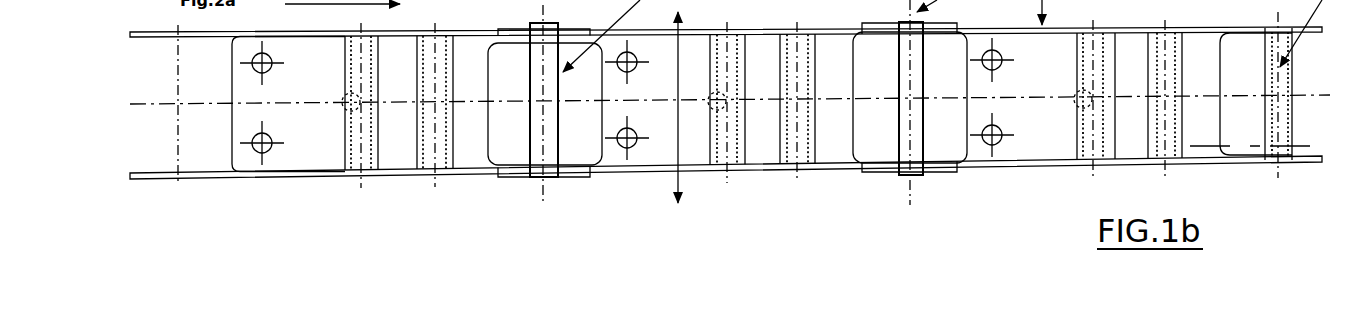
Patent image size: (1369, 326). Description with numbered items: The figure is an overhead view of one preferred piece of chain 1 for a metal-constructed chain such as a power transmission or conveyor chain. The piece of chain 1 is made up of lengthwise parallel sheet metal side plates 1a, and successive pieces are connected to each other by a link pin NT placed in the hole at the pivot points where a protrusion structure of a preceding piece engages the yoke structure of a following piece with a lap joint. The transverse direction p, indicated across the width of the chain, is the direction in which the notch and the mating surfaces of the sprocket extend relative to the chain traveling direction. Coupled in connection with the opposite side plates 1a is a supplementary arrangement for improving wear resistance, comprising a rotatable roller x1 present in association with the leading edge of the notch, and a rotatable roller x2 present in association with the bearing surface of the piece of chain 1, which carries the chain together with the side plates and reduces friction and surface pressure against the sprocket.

The piece of chain 1 is at (407, 33).
The side plate 1a is at (997, 175).
The link pin NT is at (543, 150).
The rotatable roller x1 is at (822, 183).
The rotatable roller x2 is at (732, 185).
The transverse direction p is at (685, 25).